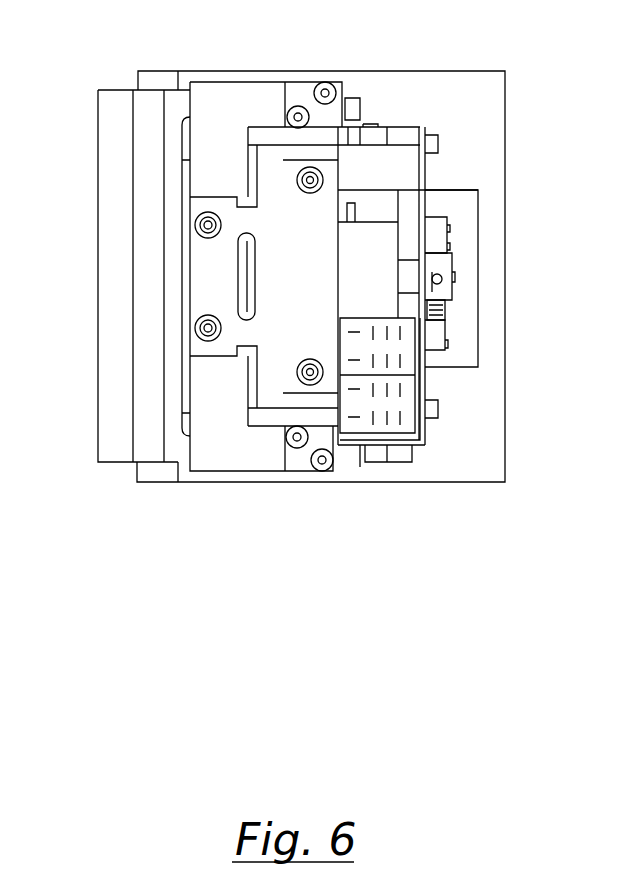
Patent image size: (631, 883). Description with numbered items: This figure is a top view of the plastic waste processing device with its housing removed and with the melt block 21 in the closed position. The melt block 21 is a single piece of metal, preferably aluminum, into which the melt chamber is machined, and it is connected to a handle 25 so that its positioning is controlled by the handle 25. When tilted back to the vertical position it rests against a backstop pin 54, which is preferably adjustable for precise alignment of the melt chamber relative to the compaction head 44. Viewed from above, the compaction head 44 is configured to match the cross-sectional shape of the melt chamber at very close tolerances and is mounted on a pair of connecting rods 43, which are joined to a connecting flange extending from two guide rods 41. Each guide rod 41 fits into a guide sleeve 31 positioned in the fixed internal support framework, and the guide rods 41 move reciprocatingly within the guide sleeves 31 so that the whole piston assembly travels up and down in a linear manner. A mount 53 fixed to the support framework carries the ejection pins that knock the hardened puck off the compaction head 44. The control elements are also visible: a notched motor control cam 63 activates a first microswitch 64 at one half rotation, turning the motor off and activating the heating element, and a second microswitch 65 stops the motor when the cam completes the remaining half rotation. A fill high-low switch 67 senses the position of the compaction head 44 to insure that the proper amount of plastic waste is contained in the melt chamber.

The melt block 21 is at (177, 97).
The handle 25 is at (118, 243).
The guide sleeve 31 is at (313, 168).
The guide rod 41 is at (297, 108).
The connecting rod 43 is at (196, 327).
The compaction head 44 is at (188, 205).
The mount 53 is at (227, 97).
The backstop pin 54 is at (247, 143).
The motor control cam 63 is at (440, 288).
The first microswitch 64 is at (435, 232).
The second microswitch 65 is at (433, 333).
The fill high-low switch 67 is at (370, 147).